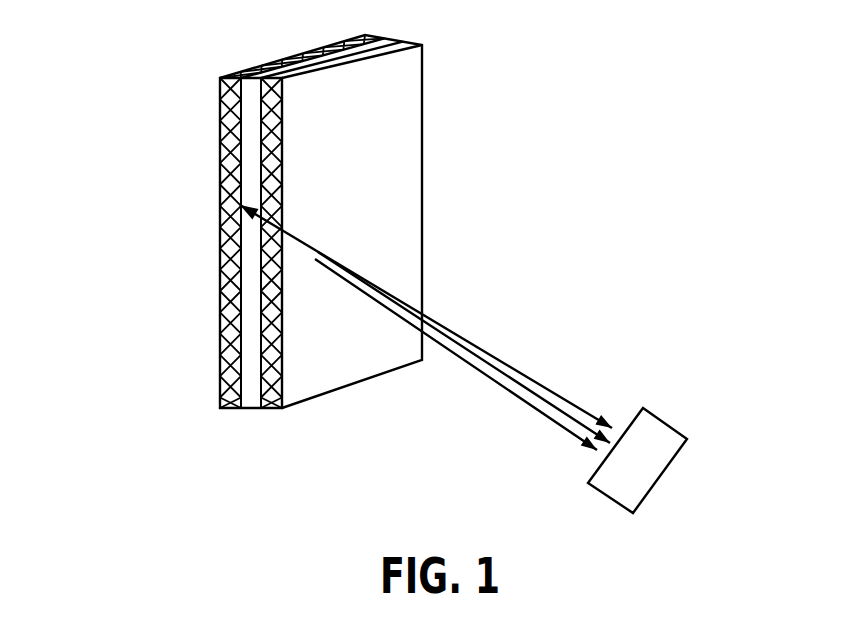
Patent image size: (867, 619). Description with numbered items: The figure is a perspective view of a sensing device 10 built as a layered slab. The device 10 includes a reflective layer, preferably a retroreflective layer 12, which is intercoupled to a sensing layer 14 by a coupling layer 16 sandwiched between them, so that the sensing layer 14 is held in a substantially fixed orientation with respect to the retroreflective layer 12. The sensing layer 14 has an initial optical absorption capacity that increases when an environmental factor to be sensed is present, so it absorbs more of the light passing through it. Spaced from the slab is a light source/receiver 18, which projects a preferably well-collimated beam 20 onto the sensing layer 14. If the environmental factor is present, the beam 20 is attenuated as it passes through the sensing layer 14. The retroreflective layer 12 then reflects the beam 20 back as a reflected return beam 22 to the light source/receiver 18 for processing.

The sensing device 10 is at (314, 254).
The retroreflective layer 12 is at (218, 100).
The sensing layer 14 is at (267, 410).
The coupling layer 16 is at (247, 403).
The light source/receiver 18 is at (655, 430).
The beam 20 is at (457, 342).
The reflected return beam 22 is at (520, 370).